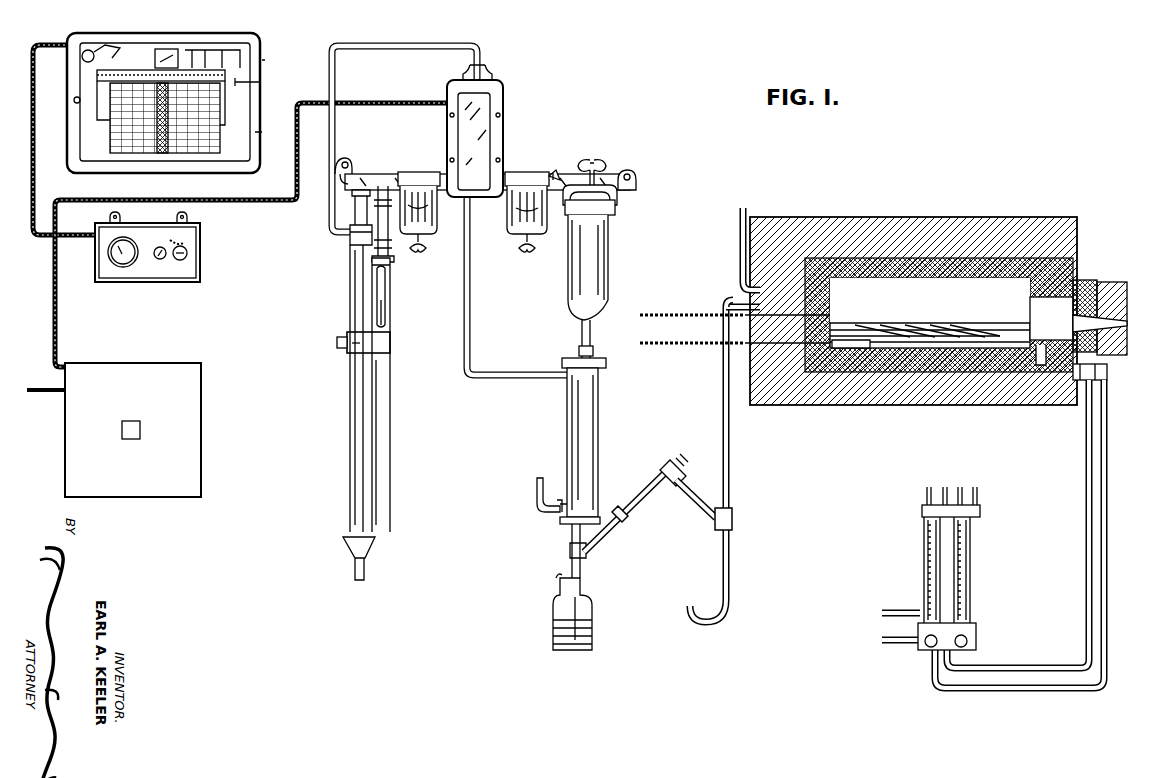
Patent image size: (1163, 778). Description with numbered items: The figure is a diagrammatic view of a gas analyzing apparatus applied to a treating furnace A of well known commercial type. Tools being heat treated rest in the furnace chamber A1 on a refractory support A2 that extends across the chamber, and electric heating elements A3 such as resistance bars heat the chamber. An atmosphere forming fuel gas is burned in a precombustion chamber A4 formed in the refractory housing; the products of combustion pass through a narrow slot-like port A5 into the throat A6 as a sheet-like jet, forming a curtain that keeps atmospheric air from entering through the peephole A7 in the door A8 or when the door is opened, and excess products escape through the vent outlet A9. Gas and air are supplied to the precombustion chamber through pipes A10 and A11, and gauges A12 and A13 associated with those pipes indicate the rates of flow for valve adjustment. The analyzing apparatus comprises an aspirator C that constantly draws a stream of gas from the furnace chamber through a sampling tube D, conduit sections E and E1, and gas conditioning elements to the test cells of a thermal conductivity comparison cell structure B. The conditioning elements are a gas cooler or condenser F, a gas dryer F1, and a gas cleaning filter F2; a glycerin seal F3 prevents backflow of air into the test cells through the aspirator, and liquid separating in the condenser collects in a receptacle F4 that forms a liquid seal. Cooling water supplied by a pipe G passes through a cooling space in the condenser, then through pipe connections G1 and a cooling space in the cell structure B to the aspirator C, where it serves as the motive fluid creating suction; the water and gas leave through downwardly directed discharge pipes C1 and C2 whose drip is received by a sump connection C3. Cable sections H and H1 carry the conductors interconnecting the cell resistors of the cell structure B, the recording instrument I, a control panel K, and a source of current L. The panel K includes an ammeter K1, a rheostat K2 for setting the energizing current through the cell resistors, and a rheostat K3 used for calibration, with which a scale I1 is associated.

The recording instrument I is at (247, 91).
The scale I1 is at (170, 240).
The cable section H is at (285, 199).
The cable section H1 is at (36, 183).
The control panel K is at (190, 240).
The ammeter K1 is at (128, 258).
The rheostat K2 is at (163, 260).
The rheostat K3 is at (187, 254).
The source of current L is at (195, 378).
The pipe connections G1 is at (336, 140).
The thermal conductivity comparison cell structure B is at (482, 98).
The glycerin seal F3 is at (437, 233).
The gas cleaning filter F2 is at (547, 233).
The gas dryer F1 is at (600, 266).
The conduit section E1 is at (591, 352).
The aspirator C is at (348, 341).
The discharge pipe C1 is at (350, 450).
The discharge pipe C2 is at (378, 452).
The sump connection C3 is at (372, 553).
The gas cooler or condenser F is at (570, 446).
The pipe G is at (536, 492).
The conduit section E is at (645, 490).
The sampling tube D is at (732, 518).
The receptacle F4 is at (590, 620).
The furnace A is at (948, 230).
The furnace chamber A1 is at (930, 300).
The refractory support A2 is at (984, 330).
The electric heating elements A3 is at (848, 338).
The precombustion chamber A4 is at (1048, 392).
The port A5 is at (1042, 346).
The throat A6 is at (1033, 308).
The peephole A7 is at (1081, 318).
The door A8 is at (1100, 292).
The vent outlet A9 is at (738, 256).
The gas pipe A10 is at (1088, 470).
The air pipe A11 is at (1101, 516).
The gauge A12 is at (966, 606).
The gauge A13 is at (930, 578).